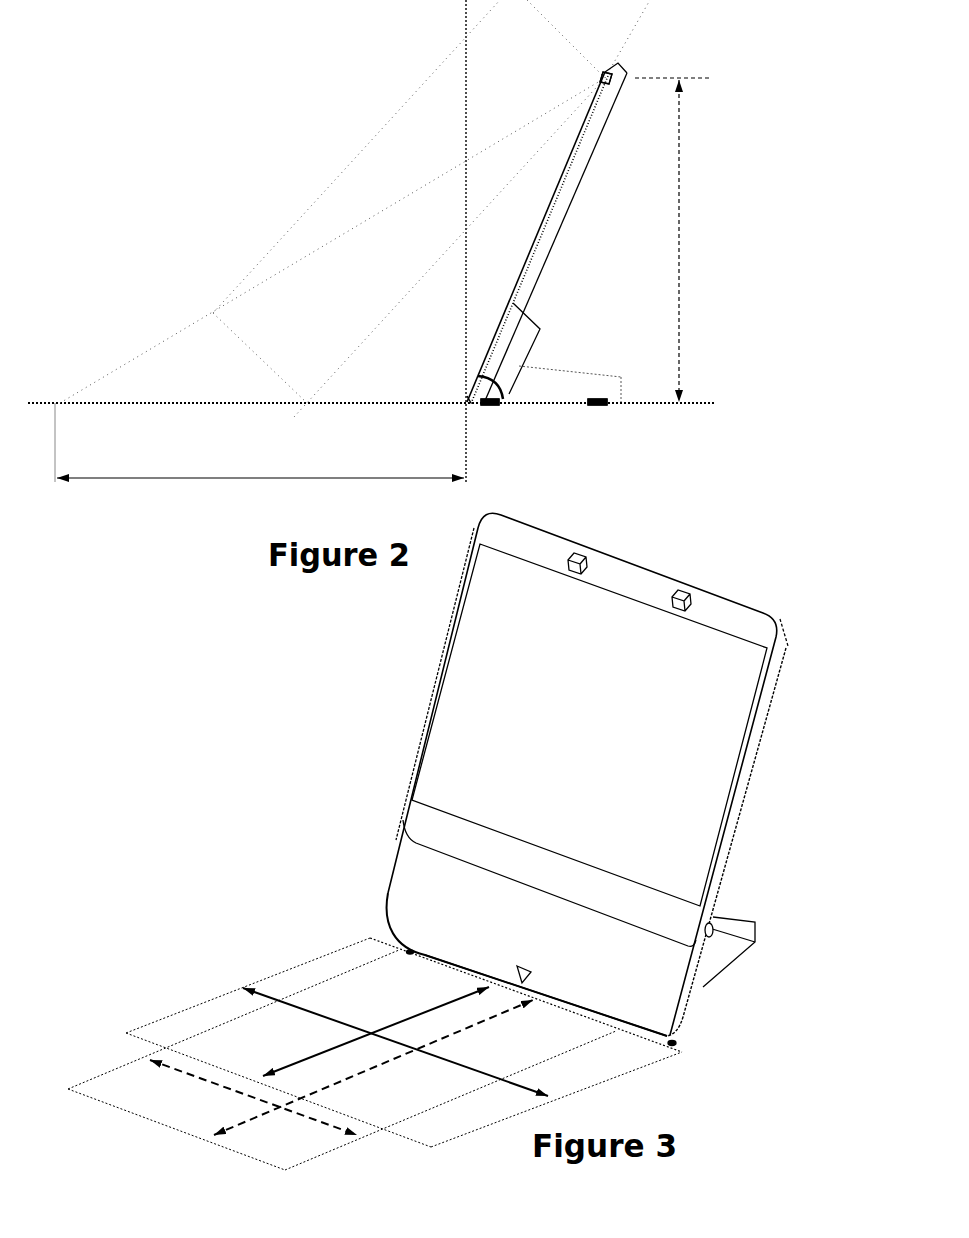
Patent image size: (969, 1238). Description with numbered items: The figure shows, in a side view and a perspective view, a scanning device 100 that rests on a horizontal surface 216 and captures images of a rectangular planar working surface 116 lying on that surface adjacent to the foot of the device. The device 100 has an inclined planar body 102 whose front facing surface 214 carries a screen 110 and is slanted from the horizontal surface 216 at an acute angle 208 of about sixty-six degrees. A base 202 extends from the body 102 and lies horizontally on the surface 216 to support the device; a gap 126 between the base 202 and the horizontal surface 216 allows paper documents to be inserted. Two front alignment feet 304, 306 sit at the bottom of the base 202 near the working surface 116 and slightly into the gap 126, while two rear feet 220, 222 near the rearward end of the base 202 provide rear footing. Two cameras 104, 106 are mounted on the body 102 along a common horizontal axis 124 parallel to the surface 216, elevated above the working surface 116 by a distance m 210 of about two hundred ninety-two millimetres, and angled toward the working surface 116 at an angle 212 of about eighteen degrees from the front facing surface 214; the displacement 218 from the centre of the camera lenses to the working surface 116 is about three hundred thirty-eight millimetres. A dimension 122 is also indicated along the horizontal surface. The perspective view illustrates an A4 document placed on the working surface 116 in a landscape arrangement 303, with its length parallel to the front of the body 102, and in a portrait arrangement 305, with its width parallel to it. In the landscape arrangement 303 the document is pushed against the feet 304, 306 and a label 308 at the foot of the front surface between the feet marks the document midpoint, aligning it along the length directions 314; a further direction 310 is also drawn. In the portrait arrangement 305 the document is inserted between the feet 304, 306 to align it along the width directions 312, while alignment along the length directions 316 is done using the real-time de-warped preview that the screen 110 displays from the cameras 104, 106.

In FIG. 3, the device 100 is at (374, 684).
In FIG. 2, the inclined planar body 102 is at (600, 128).
In FIG. 2, the camera 104 is at (606, 70).
In FIG. 3, the camera 104 is at (583, 556).
In FIG. 2, the camera 106 is at (606, 70).
In FIG. 3, the camera 106 is at (689, 592).
In FIG. 3, the screen 110 is at (746, 688).
In FIG. 3, the rectangular planar working surface 116 is at (639, 1064).
In FIG. 2, the distance from support surface to user 122 is at (212, 481).
In FIG. 3, the horizontal axis 124 is at (565, 1003).
In FIG. 2, the gap 126 is at (470, 405).
In FIG. 2, the base 202 is at (608, 377).
In FIG. 2, the acute angle 208 is at (477, 377).
In FIG. 2, the distance m 210 is at (678, 198).
In FIG. 2, the angle 212 is at (593, 107).
In FIG. 2, the front facing surface 214 is at (531, 250).
In FIG. 2, the horizontal surface 216 is at (38, 400).
In FIG. 2, the displacement 218 is at (347, 168).
In FIG. 2, the rear foot 220 is at (597, 405).
In FIG. 2, the rear foot 222 is at (597, 405).
In FIG. 3, the landscape arrangement 303 is at (290, 971).
In FIG. 2, the front alignment foot 304 is at (493, 407).
In FIG. 3, the front alignment foot 304 is at (403, 950).
In FIG. 3, the portrait arrangement 305 is at (128, 1062).
In FIG. 2, the front alignment foot 306 is at (493, 407).
In FIG. 3, the front alignment foot 306 is at (677, 1044).
In FIG. 3, the label 308 is at (531, 972).
In FIG. 3, the sheet length dimension 310 is at (455, 1004).
In FIG. 3, the directions of the width 312 is at (209, 1081).
In FIG. 3, the directions of the length 314 is at (468, 1072).
In FIG. 3, the directions of the length 316 is at (360, 1075).